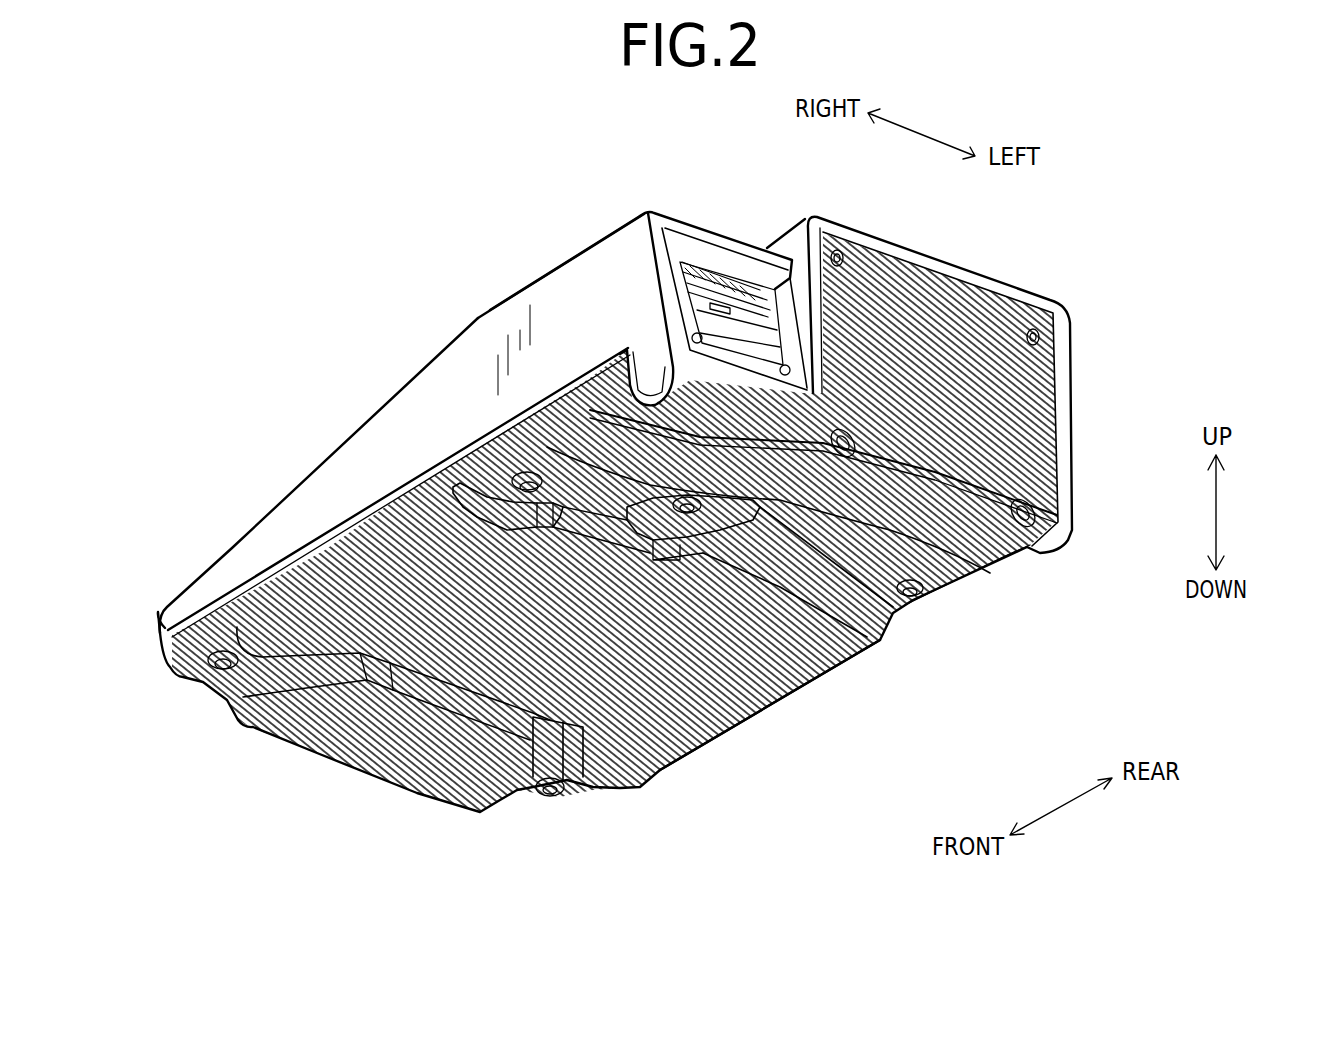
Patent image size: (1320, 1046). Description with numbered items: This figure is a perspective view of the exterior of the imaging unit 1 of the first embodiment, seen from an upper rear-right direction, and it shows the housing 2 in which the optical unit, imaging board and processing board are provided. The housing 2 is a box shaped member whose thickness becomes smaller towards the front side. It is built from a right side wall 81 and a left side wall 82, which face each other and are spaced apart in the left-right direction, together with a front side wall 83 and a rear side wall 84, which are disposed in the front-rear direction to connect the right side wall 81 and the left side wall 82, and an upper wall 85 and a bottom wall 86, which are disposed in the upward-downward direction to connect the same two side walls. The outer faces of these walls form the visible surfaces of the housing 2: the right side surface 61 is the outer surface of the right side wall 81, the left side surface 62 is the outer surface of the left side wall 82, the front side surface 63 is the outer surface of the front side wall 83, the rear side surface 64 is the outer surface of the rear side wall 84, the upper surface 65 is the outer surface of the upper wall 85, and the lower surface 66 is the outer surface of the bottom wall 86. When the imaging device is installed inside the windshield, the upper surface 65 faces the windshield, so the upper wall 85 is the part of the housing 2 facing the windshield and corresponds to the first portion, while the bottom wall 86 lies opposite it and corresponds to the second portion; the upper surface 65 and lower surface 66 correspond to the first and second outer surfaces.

The imaging unit 1 is at (278, 176).
The housing 2 is at (640, 203).
The right side surface 61 is at (432, 415).
The left side surface 62 is at (830, 668).
The front side surface 63 is at (413, 790).
The rear side surface 64 is at (1053, 433).
The upper surface 65 is at (493, 307).
The lower surface 66 is at (640, 650).
The right side wall 81 is at (440, 371).
The left side wall 82 is at (881, 659).
The front side wall 83 is at (357, 781).
The rear side wall 84 is at (1043, 380).
The upper wall 85 is at (534, 270).
The bottom wall 86 is at (707, 664).